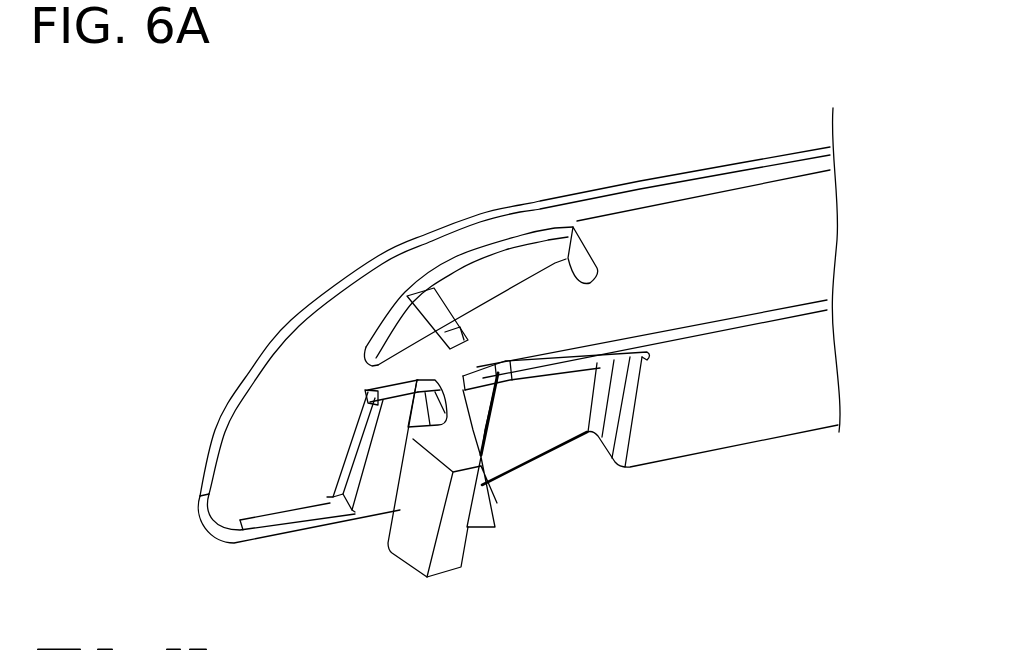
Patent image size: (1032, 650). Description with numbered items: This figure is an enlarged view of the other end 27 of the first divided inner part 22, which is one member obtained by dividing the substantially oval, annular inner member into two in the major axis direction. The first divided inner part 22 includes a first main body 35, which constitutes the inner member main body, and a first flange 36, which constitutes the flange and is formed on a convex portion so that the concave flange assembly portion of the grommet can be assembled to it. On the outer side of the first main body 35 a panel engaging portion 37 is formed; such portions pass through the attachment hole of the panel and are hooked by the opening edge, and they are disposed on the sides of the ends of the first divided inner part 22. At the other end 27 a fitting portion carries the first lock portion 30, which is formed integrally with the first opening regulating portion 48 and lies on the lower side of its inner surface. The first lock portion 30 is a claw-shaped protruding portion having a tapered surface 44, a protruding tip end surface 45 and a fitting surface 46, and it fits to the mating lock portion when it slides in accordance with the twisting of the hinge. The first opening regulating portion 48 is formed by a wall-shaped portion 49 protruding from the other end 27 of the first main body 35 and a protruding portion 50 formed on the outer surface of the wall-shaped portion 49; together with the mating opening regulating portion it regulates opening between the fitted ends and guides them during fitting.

The first divided inner part 22 is at (239, 324).
The other end 27 is at (415, 348).
The first lock portion 30 is at (518, 461).
The first main body 35 is at (780, 230).
The first flange 36 is at (547, 223).
The panel engaging portion 37 is at (455, 263).
The tapered surface 44 is at (483, 528).
The protruding tip end surface 45 is at (488, 526).
The fitting surface 46 is at (500, 484).
The first opening regulating portion 48 is at (408, 540).
The wall-shaped portion 49 is at (457, 407).
The protruding portion 50 is at (393, 490).